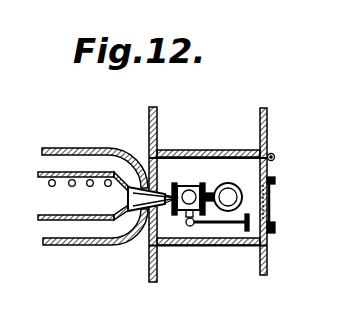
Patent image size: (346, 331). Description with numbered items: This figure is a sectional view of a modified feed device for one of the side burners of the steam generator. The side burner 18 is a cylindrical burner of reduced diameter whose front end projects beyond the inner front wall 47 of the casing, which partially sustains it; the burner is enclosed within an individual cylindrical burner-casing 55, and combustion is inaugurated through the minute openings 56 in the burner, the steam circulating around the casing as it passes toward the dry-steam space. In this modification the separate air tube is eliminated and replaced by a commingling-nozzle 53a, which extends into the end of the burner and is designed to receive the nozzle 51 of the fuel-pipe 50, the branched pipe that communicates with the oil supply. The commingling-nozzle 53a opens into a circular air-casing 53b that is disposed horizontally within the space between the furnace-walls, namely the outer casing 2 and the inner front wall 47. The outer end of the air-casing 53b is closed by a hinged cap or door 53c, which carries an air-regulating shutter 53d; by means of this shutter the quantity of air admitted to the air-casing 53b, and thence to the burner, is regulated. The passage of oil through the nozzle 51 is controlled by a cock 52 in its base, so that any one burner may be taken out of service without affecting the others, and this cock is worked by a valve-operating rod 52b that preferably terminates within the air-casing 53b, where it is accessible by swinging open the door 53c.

The outer casing 2 is at (268, 250).
The side burner 18 is at (95, 157).
The inner front wall 47 is at (152, 262).
The fuel-pipe 50 is at (229, 183).
The nozzle 51 is at (192, 188).
The cock 52 is at (186, 222).
The valve-operating rod 52b is at (225, 225).
The commingling-nozzle 53a is at (157, 190).
The circular air-casing 53b is at (202, 166).
The hinged cap or door 53c is at (273, 165).
The air-regulating shutter 53d is at (276, 192).
The burner-casing 55 is at (76, 230).
The minute openings 56 is at (84, 196).